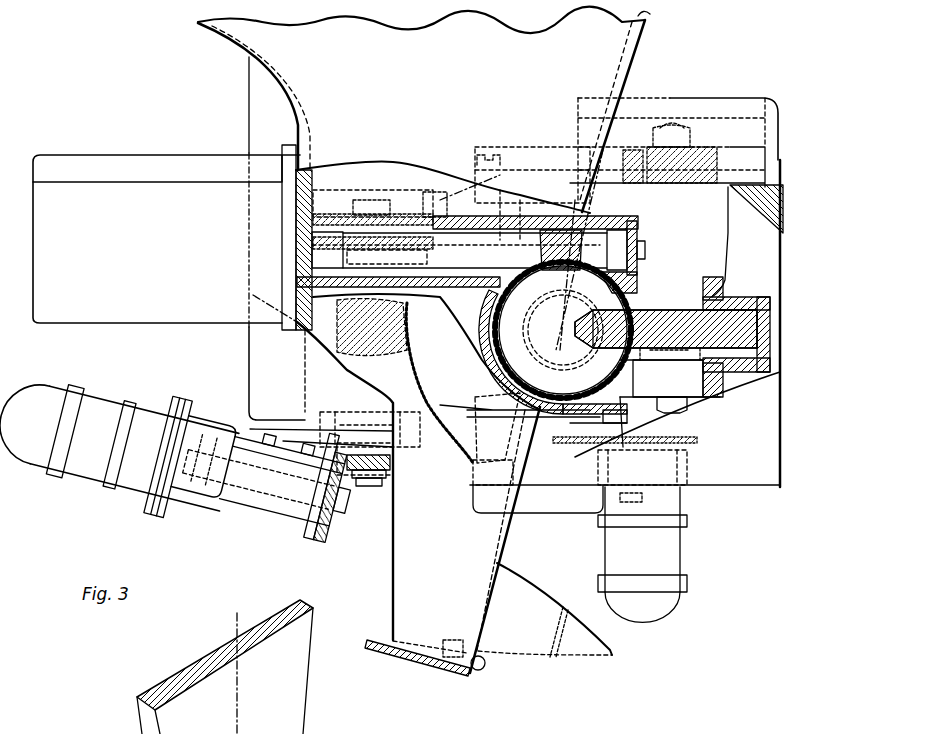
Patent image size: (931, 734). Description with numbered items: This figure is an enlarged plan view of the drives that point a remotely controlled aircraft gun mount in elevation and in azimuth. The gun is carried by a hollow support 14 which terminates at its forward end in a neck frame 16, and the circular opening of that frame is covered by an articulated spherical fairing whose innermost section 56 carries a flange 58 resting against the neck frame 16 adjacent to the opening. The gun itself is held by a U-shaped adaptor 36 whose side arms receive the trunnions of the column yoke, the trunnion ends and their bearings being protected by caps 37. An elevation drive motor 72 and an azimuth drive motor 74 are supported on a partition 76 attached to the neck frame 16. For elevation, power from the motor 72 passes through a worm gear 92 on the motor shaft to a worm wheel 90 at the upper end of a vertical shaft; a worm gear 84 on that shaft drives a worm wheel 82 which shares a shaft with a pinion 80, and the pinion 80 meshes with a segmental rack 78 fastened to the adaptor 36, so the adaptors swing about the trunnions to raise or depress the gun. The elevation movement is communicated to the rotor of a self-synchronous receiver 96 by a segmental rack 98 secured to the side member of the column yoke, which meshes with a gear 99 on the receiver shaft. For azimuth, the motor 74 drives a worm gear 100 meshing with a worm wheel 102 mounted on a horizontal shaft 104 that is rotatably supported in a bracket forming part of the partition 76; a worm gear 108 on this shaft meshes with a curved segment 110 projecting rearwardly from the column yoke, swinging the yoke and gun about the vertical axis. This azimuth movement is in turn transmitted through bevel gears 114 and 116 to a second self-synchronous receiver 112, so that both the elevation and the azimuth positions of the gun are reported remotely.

The hollow support 14 is at (430, 665).
The neck frame 16 is at (423, 645).
The U-shaped adaptor 36 is at (717, 485).
The caps 37 is at (528, 147).
The innermost section 56 is at (517, 657).
The flange 58 is at (474, 674).
The elevation drive motor 72 is at (122, 323).
The azimuth drive motor 74 is at (153, 152).
The partition 76 is at (302, 97).
The segmental rack 78 is at (747, 323).
The pinion 80 is at (752, 217).
The worm wheel 82 is at (730, 313).
The worm gear 84 is at (500, 310).
The worm wheel 90 is at (497, 372).
The worm gear 92 is at (557, 230).
The self-synchronous receiver 96 is at (680, 552).
The segmental rack 98 is at (575, 440).
The gear 99 is at (697, 440).
The worm gear 100 is at (390, 207).
The worm wheel 102 is at (357, 210).
The horizontal shaft 104 is at (310, 392).
The worm gear 108 is at (312, 338).
The curved segment 110 is at (420, 388).
The self-synchronous receiver 112 is at (60, 472).
The bevel gear 114 is at (325, 525).
The bevel gear 116 is at (393, 477).